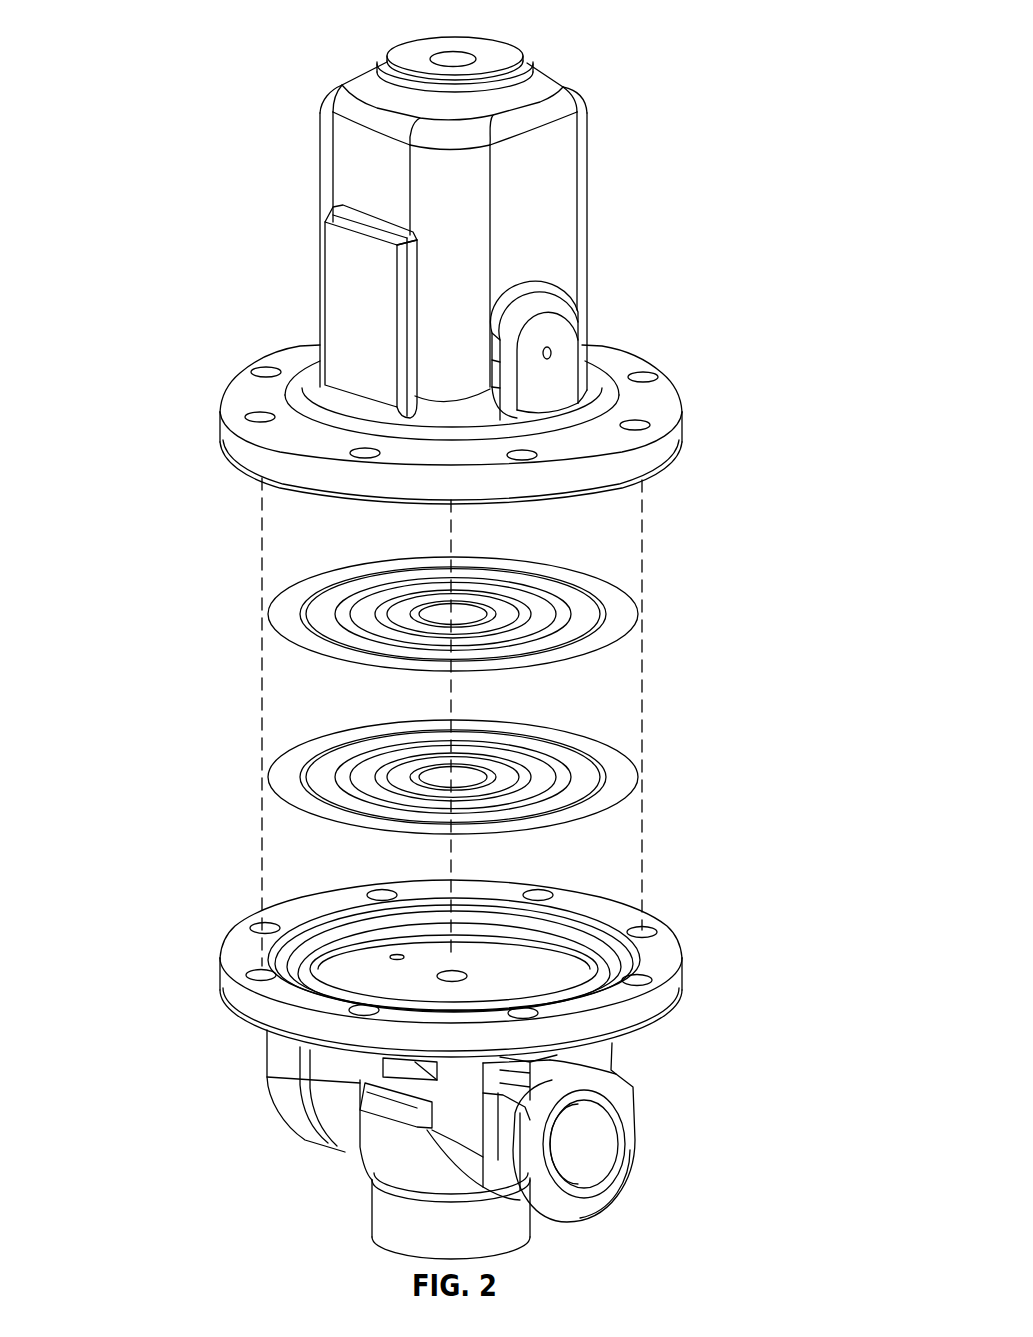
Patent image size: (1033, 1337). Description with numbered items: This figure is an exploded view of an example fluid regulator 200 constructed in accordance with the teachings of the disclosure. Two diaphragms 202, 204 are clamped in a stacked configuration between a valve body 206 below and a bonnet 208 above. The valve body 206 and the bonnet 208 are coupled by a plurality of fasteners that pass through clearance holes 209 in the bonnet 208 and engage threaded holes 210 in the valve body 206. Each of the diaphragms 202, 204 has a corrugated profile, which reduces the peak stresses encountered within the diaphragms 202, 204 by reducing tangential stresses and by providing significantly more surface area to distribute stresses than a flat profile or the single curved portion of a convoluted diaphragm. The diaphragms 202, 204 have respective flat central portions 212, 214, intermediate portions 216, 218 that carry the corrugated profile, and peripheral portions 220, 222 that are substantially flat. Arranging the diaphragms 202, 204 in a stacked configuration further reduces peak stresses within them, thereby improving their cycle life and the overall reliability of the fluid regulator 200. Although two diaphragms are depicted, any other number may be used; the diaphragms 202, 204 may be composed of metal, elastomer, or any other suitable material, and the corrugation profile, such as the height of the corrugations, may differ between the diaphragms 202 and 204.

The fluid regulator 200 is at (565, 54).
The diaphragm 202 is at (337, 632).
The diaphragm 204 is at (342, 777).
The valve body 206 is at (670, 978).
The bonnet 208 is at (505, 478).
The clearance holes 209 is at (648, 383).
The threaded holes 210 is at (632, 932).
The flat central portion 212 is at (432, 617).
The flat central portion 214 is at (477, 778).
The intermediate portion 216 is at (360, 583).
The intermediate portion 218 is at (573, 767).
The peripheral portion 220 is at (288, 625).
The peripheral portion 222 is at (617, 790).